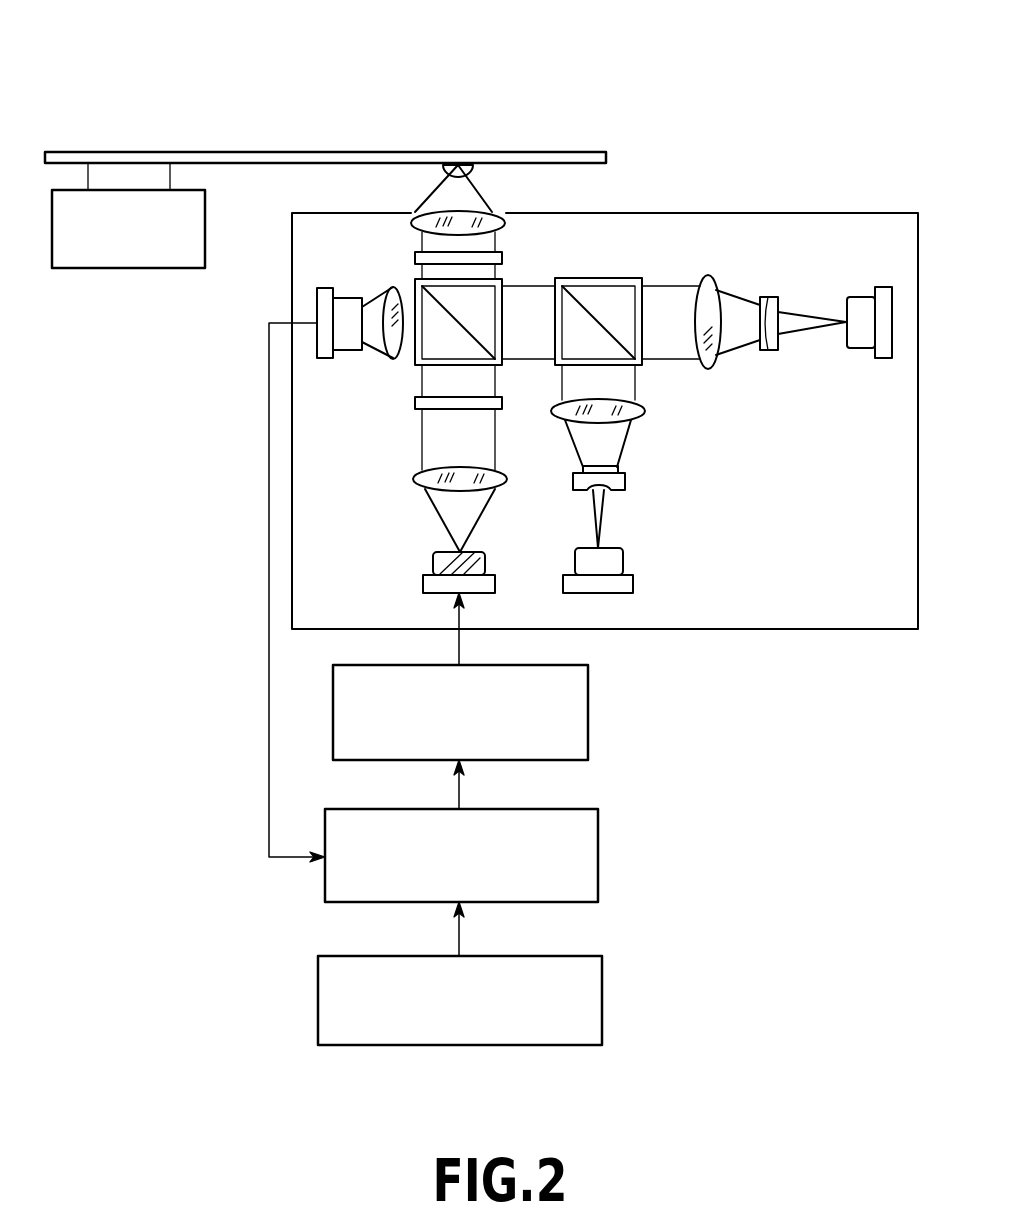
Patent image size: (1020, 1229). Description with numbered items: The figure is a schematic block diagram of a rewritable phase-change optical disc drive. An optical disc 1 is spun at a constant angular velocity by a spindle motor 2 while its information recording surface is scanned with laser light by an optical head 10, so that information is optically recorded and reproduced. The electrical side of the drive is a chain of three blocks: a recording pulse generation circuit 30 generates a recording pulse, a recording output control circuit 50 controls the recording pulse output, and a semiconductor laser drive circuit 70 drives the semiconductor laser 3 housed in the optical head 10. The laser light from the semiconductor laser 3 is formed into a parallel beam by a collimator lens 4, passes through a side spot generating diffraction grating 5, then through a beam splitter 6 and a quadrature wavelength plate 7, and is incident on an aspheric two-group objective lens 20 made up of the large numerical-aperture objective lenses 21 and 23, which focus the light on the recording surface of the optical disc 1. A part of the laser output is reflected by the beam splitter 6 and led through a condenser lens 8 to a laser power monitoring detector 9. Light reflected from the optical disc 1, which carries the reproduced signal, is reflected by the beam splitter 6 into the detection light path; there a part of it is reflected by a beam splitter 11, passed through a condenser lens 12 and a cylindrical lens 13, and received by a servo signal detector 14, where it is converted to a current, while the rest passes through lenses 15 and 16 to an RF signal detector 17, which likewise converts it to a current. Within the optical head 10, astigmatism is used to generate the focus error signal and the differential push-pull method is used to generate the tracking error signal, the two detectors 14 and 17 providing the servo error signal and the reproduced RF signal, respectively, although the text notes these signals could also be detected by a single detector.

The optical disc 1 is at (272, 152).
The spindle motor 2 is at (140, 268).
The semiconductor laser 3 is at (433, 564).
The collimator lens 4 is at (413, 480).
The side spot generating diffraction grating 5 is at (502, 405).
The beam splitter 6 is at (505, 315).
The quadrature wavelength plate 7 is at (415, 257).
The condenser lens 8 is at (392, 347).
The laser power monitoring detector 9 is at (345, 342).
The optical head 10 is at (787, 196).
The beam splitter 11 is at (642, 315).
The condenser lens 12 is at (647, 410).
The cylindrical lens 13 is at (625, 478).
The servo signal detector 14 is at (617, 563).
The lens 15 is at (710, 310).
The lens 16 is at (770, 300).
The RF signal detector 17 is at (862, 342).
The aspheric two-group objective lens 20 is at (443, 30).
The objective lens 21 is at (462, 165).
The objective lens 23 is at (418, 222).
The recording pulse generation circuit 30 is at (602, 1000).
The recording output control circuit 50 is at (598, 860).
The semiconductor laser drive circuit 70 is at (588, 706).